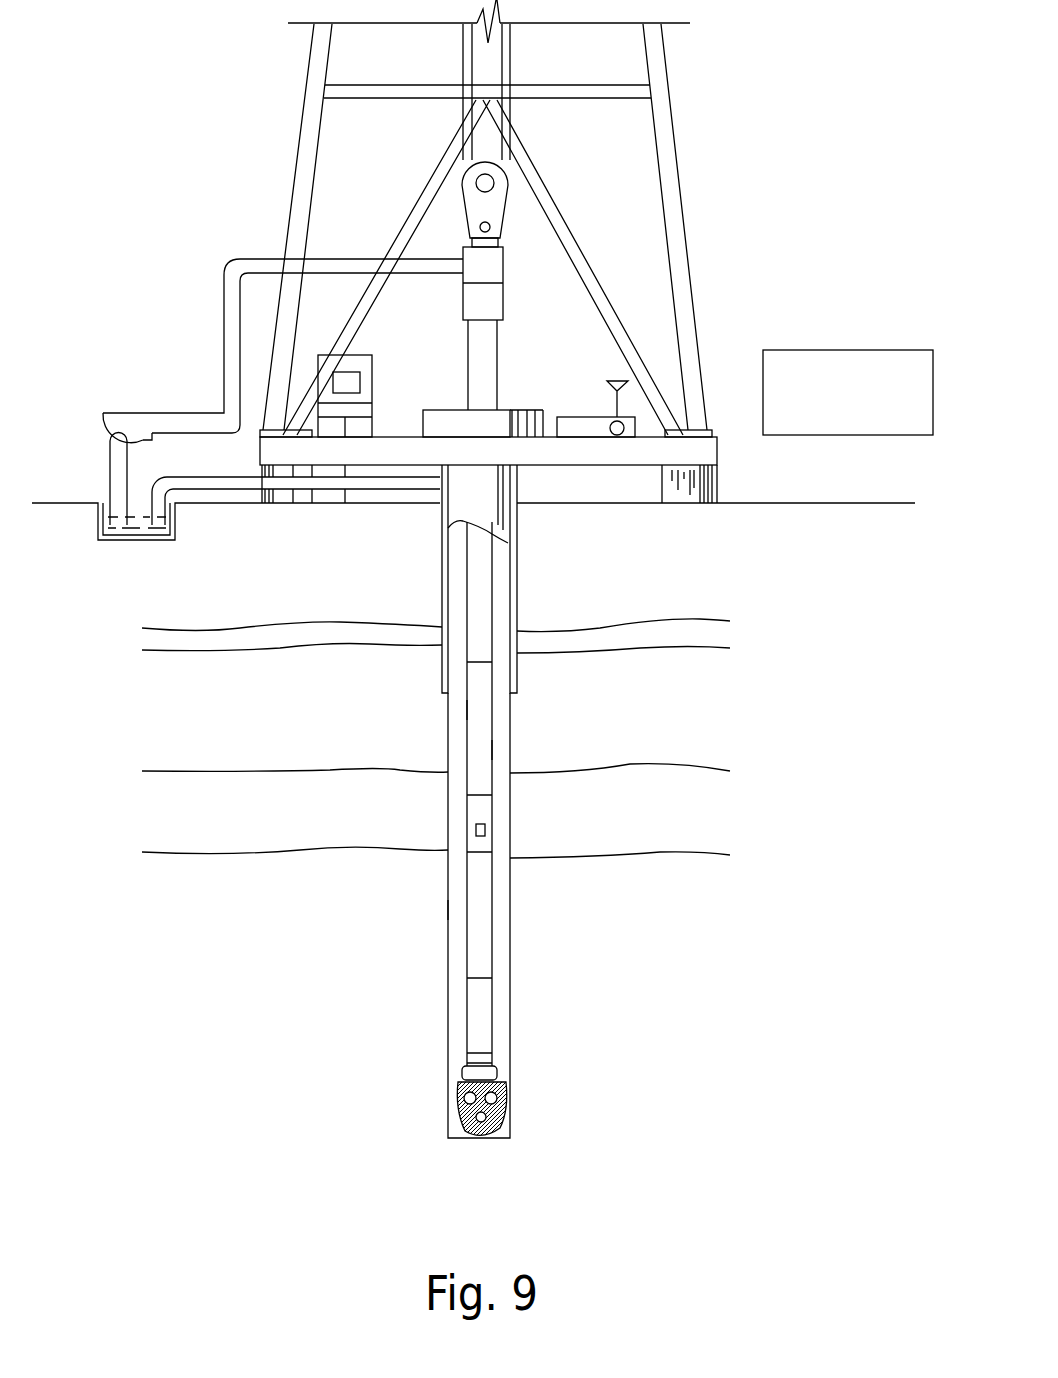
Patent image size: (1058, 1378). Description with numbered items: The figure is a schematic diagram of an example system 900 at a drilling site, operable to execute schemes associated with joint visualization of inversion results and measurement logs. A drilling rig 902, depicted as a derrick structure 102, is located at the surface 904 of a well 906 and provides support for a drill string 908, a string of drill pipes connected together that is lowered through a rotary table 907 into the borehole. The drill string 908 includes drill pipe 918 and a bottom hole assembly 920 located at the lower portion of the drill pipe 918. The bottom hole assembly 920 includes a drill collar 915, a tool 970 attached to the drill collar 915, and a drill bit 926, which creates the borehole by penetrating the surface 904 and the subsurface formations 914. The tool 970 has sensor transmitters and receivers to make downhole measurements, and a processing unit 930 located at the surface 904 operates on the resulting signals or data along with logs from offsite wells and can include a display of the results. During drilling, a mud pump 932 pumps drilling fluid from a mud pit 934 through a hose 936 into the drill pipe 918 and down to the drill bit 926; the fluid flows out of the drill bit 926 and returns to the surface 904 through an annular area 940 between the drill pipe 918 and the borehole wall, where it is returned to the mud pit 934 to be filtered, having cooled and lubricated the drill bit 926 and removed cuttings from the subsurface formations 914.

The system 900 is at (230, 63).
The drilling rig / derrick 102 is at (671, 133).
The rotary table 907 is at (455, 408).
The hose 936 is at (222, 337).
The mud pump 932 is at (127, 413).
The mud pit 934 is at (100, 503).
The processing unit 930 is at (843, 350).
The surface 904 is at (752, 503).
The well 906 is at (523, 499).
The drilling rig 902 is at (507, 630).
The drill string 908 is at (491, 570).
The drill pipe 918 is at (493, 710).
The annular area 940 is at (502, 750).
The drill collar 915 is at (482, 805).
The tool 970 is at (485, 827).
The subsurface formations 914 is at (128, 594).
The bottom hole assembly 920 is at (418, 693).
The drill bit 926 is at (503, 1098).